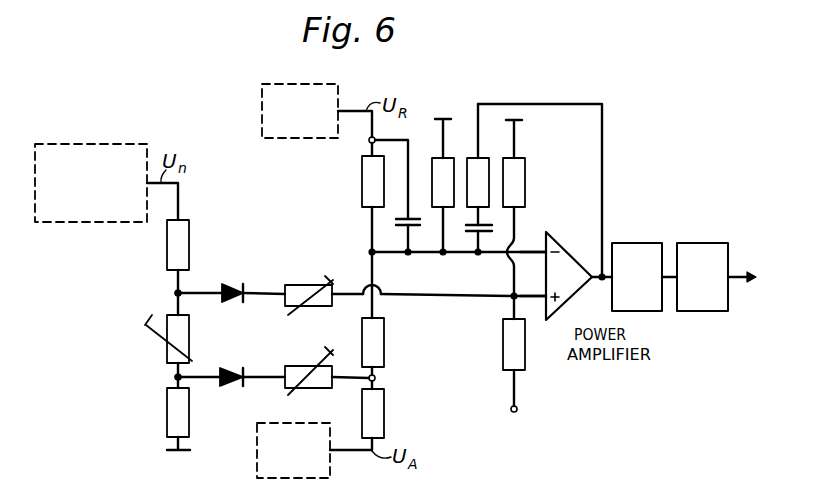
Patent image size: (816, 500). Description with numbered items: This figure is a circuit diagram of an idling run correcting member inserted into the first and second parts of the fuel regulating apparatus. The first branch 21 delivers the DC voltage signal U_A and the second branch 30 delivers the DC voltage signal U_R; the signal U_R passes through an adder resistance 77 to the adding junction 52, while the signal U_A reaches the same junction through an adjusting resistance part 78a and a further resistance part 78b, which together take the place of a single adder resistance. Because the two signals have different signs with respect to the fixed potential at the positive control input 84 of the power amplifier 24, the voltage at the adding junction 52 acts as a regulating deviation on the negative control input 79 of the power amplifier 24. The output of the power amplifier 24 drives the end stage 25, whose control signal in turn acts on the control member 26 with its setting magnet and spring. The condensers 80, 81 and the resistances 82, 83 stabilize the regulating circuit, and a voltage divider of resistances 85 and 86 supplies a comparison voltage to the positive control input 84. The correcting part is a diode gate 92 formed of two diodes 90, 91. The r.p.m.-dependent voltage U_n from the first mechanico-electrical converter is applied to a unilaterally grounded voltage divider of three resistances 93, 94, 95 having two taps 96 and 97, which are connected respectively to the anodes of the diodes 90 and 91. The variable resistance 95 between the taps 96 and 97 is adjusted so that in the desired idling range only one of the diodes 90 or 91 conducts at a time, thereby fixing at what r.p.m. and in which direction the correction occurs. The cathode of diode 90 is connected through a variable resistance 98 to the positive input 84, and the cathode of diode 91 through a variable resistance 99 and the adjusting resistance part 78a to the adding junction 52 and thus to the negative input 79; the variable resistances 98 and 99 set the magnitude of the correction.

The first branch 21 is at (257, 452).
The power amplifier 24 is at (568, 262).
The end stage 25 is at (637, 243).
The control member 26 is at (703, 243).
The second branch 30 is at (262, 97).
The adding junction 52 is at (374, 256).
The adder resistance 77 is at (368, 172).
The adjusting resistance part 78a is at (378, 338).
The further resistance part 78b is at (378, 424).
The negative control input 79 is at (527, 252).
The condenser 80 is at (400, 222).
The condenser 81 is at (492, 232).
The resistance 82 is at (437, 167).
The resistance 83 is at (472, 170).
The positive control input 84 is at (538, 303).
The resistance 85 is at (520, 178).
The resistance 86 is at (503, 350).
The diode 90 is at (232, 286).
The diode 91 is at (236, 383).
The diode gate 92 is at (239, 242).
The resistance 93 is at (187, 255).
The resistance 94 is at (172, 420).
The variable resistance 95 is at (190, 337).
The tap 96 is at (177, 293).
The tap 97 is at (177, 377).
The variable resistance 98 is at (305, 285).
The variable resistance 99 is at (322, 385).